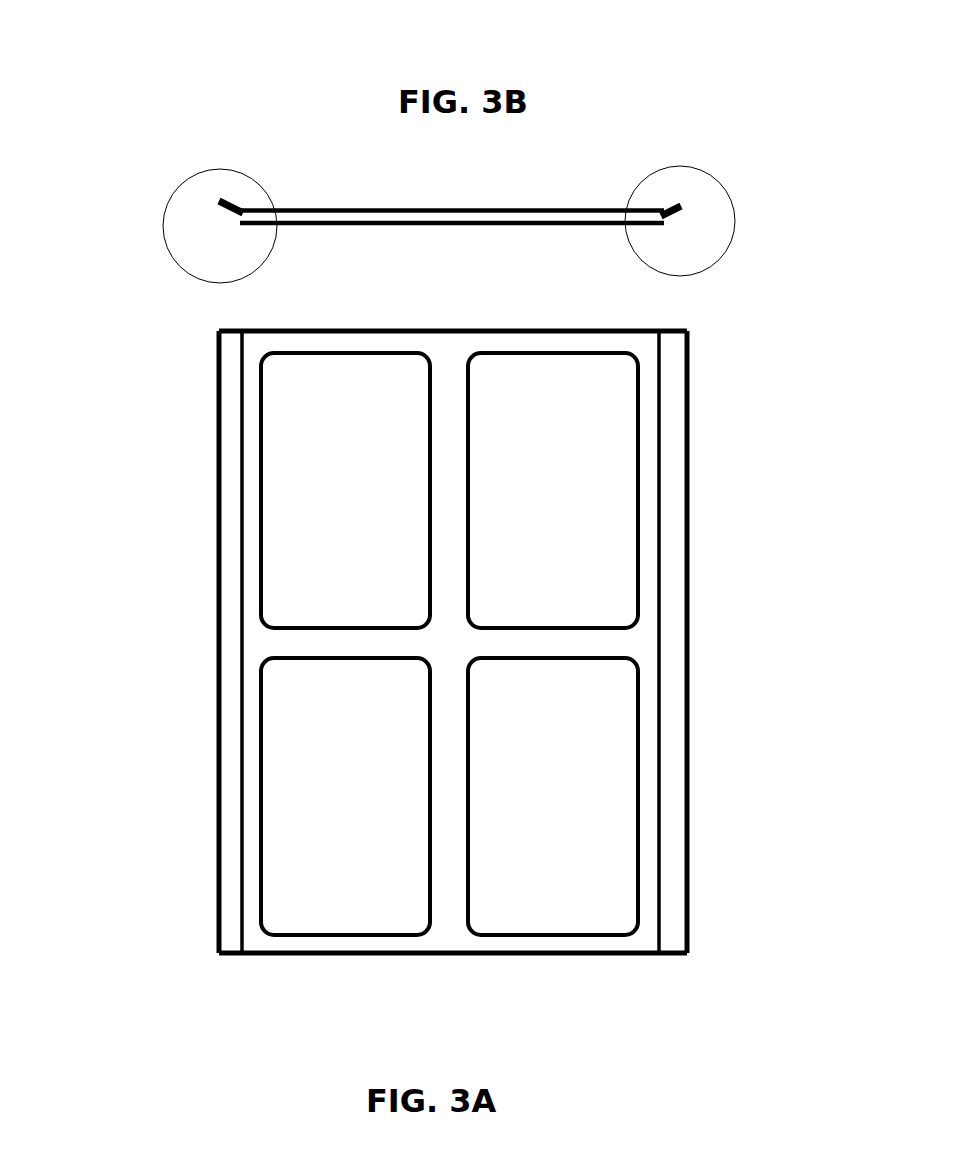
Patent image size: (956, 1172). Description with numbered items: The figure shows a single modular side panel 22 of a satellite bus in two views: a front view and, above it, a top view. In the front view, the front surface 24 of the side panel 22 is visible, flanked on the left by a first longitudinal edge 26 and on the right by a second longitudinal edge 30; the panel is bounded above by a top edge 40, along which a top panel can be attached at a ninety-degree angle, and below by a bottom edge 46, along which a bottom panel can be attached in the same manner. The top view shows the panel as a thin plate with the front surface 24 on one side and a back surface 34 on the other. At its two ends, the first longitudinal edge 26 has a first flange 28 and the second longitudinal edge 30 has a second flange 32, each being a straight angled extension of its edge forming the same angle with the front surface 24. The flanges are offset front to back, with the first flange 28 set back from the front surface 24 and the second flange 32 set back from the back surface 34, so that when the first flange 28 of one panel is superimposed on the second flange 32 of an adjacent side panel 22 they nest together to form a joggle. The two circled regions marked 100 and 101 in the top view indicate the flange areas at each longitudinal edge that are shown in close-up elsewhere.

In FIG. 3B, the side panel 22 is at (150, 91).
In FIG. 3B, the front surface 24 is at (342, 226).
In FIG. 3A, the front surface 24 is at (593, 503).
In FIG. 3A, the first longitudinal edge 26 is at (240, 592).
In FIG. 3B, the first flange 28 is at (228, 212).
In FIG. 3A, the first flange 28 is at (217, 483).
In FIG. 3A, the second longitudinal edge 30 is at (675, 647).
In FIG. 3B, the second flange 32 is at (672, 217).
In FIG. 3A, the second flange 32 is at (688, 550).
In FIG. 3B, the back surface 34 is at (432, 210).
In FIG. 3A, the top edge 40 is at (500, 331).
In FIG. 3A, the bottom edge 46 is at (470, 958).
In FIG. 3B, the first detail region 100 is at (205, 175).
In FIG. 3B, the second detail region 101 is at (682, 165).